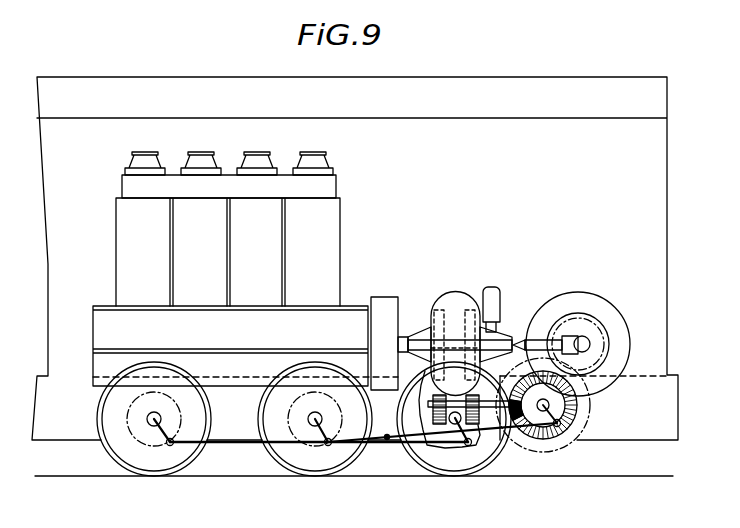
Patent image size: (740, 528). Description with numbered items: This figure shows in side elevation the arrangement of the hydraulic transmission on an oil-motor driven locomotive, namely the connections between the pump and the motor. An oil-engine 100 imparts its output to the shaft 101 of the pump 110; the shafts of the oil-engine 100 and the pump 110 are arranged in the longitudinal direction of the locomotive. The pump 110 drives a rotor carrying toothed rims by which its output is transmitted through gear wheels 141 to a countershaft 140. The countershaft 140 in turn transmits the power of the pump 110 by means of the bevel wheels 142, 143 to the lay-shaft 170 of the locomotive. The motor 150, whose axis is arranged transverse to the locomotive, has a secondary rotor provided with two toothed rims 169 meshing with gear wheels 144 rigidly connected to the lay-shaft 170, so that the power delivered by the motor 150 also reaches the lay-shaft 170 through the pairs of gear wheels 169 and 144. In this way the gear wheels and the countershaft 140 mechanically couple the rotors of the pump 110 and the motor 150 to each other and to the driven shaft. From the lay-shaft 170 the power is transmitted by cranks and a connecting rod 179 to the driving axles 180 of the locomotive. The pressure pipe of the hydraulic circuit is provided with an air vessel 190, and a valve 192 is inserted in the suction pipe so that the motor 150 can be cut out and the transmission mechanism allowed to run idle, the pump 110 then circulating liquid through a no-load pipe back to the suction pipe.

The oil-engine 100 is at (325, 231).
The shaft 101 is at (400, 334).
The pump 110 is at (448, 303).
The air vessel 190 is at (490, 297).
The valve 192 is at (515, 344).
The motor 150 is at (598, 307).
The toothed rims 169 is at (590, 361).
The lay-shaft 170 is at (543, 412).
The gear wheels 144 is at (585, 423).
The bevel wheel 143 is at (551, 423).
The bevel wheel 142 is at (513, 428).
The countershaft 140 is at (485, 407).
The gear wheels 141 is at (463, 436).
The connecting rod 179 is at (380, 443).
The driving axles 180 is at (152, 427).